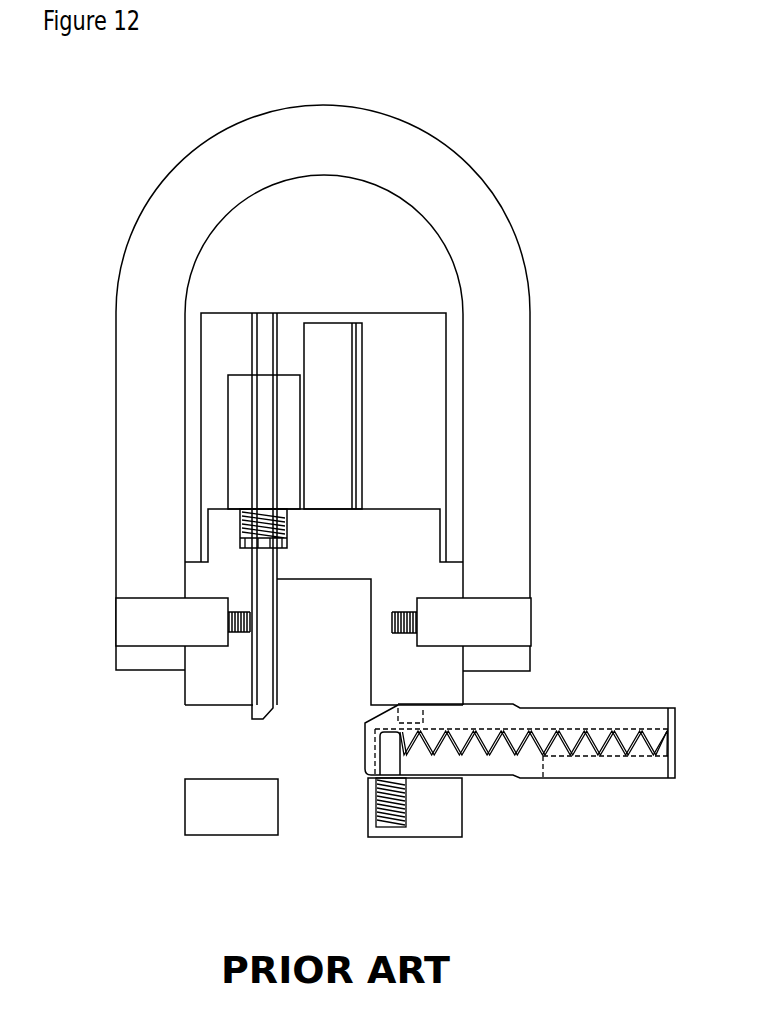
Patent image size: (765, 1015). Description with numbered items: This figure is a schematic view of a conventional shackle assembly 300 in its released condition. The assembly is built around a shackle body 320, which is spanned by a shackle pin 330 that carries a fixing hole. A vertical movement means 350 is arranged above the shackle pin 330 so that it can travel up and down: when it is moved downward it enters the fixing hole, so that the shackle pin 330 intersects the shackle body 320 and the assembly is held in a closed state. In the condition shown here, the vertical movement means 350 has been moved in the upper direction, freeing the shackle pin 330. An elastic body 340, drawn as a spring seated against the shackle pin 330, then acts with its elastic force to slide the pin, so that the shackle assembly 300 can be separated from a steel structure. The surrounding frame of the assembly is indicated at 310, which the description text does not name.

The shackle assembly 300 is at (107, 156).
The U-shaped frame 310 is at (508, 338).
The shackle body 320 is at (443, 580).
The shackle pin 330 is at (612, 722).
The elastic body 340 is at (607, 750).
The vertical movement means 350 is at (240, 528).